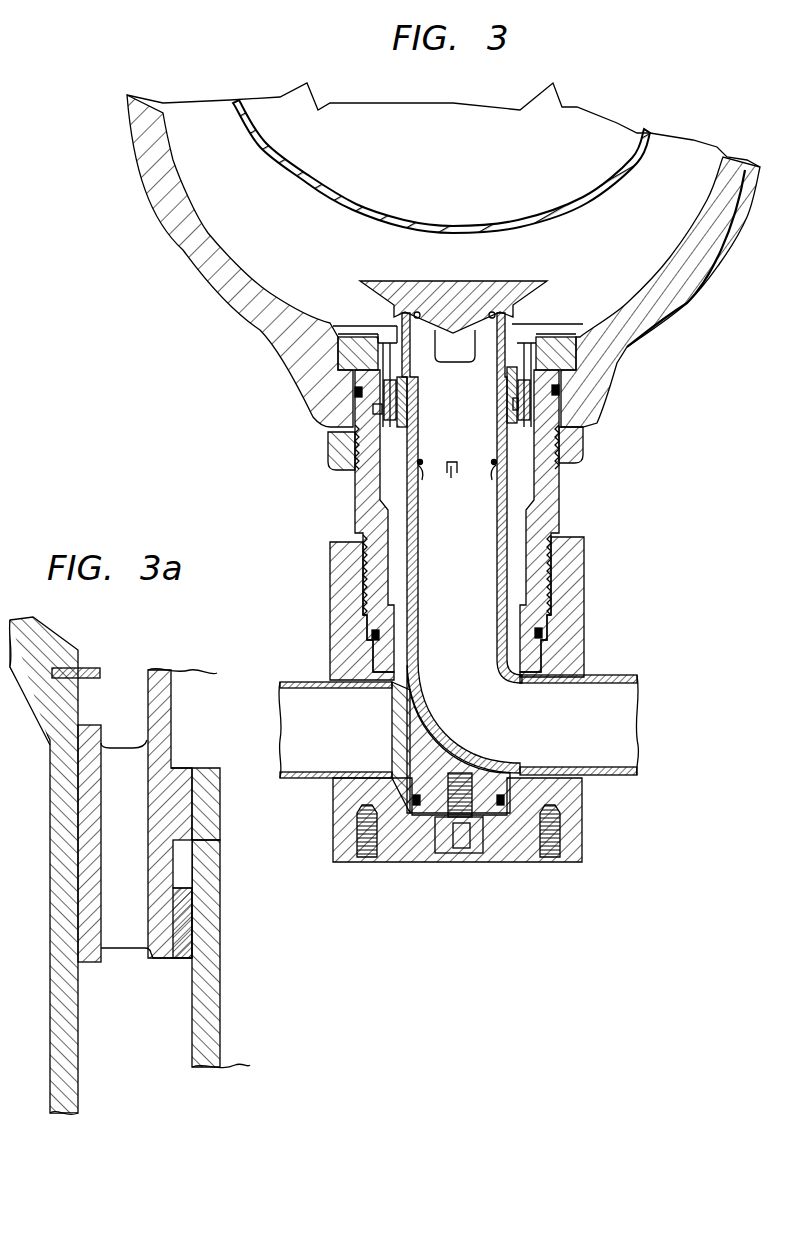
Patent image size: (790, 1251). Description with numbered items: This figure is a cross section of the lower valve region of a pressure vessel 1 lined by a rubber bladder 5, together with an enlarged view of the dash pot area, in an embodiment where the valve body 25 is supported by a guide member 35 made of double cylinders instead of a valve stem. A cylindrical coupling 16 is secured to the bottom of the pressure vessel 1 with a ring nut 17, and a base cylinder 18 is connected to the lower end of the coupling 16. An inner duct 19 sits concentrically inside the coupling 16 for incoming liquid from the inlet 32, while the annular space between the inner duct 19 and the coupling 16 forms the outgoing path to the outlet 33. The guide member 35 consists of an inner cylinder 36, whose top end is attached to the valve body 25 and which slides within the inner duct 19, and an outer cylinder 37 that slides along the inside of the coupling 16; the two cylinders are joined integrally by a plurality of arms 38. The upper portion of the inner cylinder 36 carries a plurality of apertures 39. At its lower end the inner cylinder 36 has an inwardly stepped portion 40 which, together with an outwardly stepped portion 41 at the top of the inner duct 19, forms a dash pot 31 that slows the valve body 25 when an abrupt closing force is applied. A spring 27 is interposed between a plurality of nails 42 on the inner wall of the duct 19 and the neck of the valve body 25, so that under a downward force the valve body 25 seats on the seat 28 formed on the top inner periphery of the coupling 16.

In FIG. 3, the pressure vessel 1 is at (697, 283).
In FIG. 3, the bladder 5 is at (613, 170).
In FIG. 3, the cylindrical coupling 16 is at (355, 500).
In FIG. 3a, the cylindrical coupling 16 is at (67, 1080).
In FIG. 3, the ring nut 17 is at (584, 463).
In FIG. 3, the base cylinder 18 is at (568, 620).
In FIG. 3, the inner duct 19 is at (555, 560).
In FIG. 3, the valve body 25 is at (503, 281).
In FIG. 3, the spring 27 is at (585, 443).
In FIG. 3, the seat 28 is at (337, 333).
In FIG. 3, the dash pot 31 is at (360, 412).
In FIG. 3a, the dash pot 31 is at (189, 865).
In FIG. 3, the inlet 32 is at (628, 712).
In FIG. 3, the outlet 33 is at (297, 695).
In FIG. 3, the guide member 35 is at (387, 326).
In FIG. 3a, the guide member 35 is at (222, 878).
In FIG. 3, the inner cylinder 36 is at (550, 397).
In FIG. 3a, the inner cylinder 36 is at (148, 678).
In FIG. 3, the outer cylinder 37 is at (550, 372).
In FIG. 3a, the outer cylinder 37 is at (113, 853).
In FIG. 3, the arms 38 is at (520, 407).
In FIG. 3a, the arms 38 is at (127, 933).
In FIG. 3, the apertures 39 is at (453, 362).
In FIG. 3, the inwardly stepped portion 40 is at (398, 432).
In FIG. 3a, the inwardly stepped portion 40 is at (177, 920).
In FIG. 3, the outwardly stepped portion 41 is at (386, 414).
In FIG. 3a, the outwardly stepped portion 41 is at (183, 800).
In FIG. 3, the nails 42 is at (494, 466).